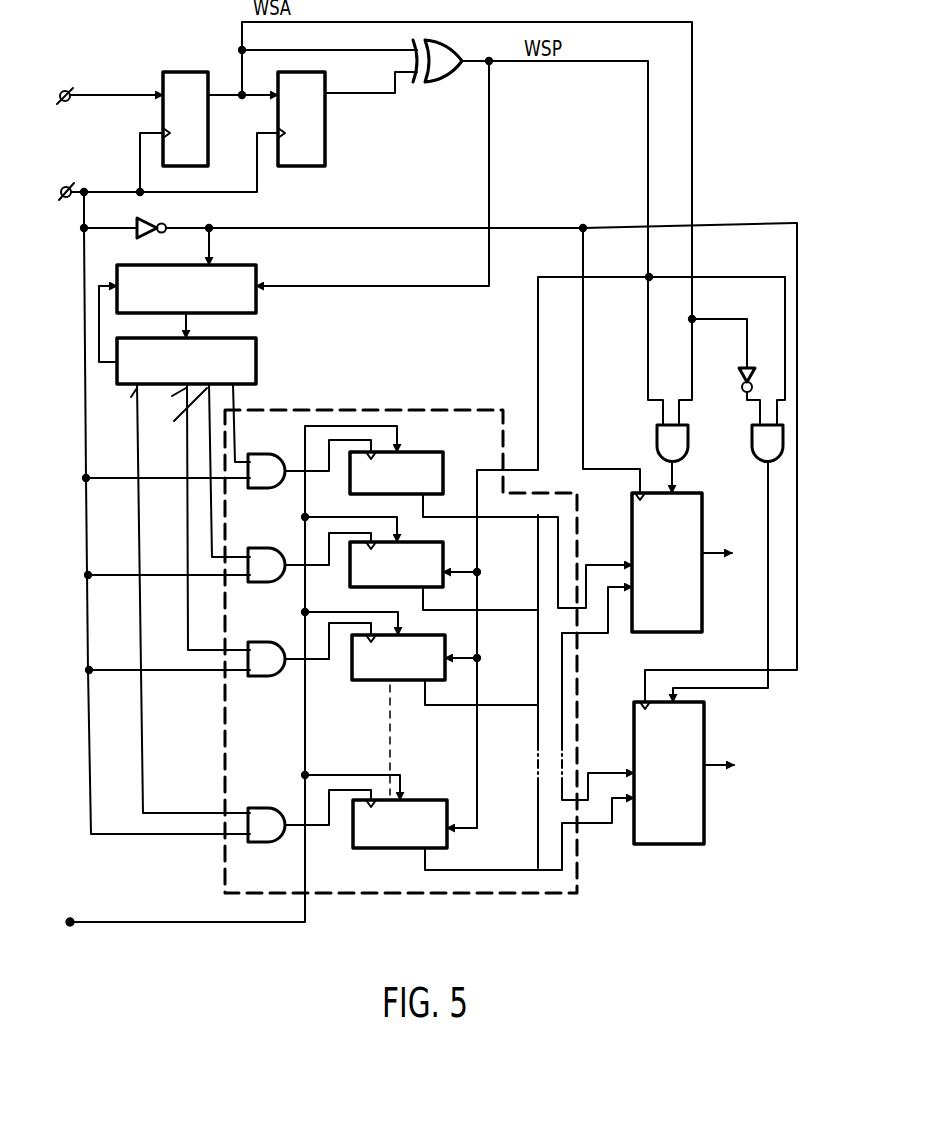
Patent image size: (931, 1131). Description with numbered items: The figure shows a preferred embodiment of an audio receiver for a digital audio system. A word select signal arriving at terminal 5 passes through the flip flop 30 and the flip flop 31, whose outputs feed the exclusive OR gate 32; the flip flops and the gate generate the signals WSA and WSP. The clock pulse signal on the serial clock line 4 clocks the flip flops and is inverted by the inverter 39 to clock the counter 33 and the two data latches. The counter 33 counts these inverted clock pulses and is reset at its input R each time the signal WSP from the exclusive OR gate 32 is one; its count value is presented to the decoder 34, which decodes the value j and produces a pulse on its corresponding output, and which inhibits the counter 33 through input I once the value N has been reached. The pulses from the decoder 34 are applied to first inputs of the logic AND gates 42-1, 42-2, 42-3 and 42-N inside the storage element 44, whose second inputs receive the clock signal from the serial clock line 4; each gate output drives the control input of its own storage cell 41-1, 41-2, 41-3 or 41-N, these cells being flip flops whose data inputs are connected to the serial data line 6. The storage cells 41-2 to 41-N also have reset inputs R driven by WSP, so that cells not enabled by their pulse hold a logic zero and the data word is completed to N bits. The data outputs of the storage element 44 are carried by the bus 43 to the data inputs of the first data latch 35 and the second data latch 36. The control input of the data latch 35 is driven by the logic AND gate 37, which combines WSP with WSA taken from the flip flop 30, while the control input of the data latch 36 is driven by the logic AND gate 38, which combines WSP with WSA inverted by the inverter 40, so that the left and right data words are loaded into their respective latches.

The serial clock line 4 is at (97, 191).
The word select input terminal 5 is at (105, 94).
The serial data line 6 is at (157, 919).
The flip flop 30 is at (185, 71).
The flip flop 31 is at (325, 141).
The exclusive OR gate 32 is at (444, 82).
The counter 33 is at (256, 302).
The decoder 34 is at (256, 364).
The first data latch 35 is at (702, 512).
The second data latch 36 is at (704, 732).
The logic AND gate 37 is at (690, 447).
The logic AND gate 38 is at (750, 449).
The inverter 39 is at (160, 222).
The inverter 40 is at (757, 374).
The storage cell 41-1 is at (443, 458).
The storage cell 41-2 is at (443, 546).
The storage cell 41-3 is at (445, 640).
The storage cell 41-N is at (415, 795).
The logic AND gate 42-1 is at (265, 489).
The logic AND gate 42-2 is at (265, 583).
The logic AND gate 42-3 is at (265, 677).
The logic AND gate 42-N is at (265, 843).
The bus 43 is at (565, 700).
The storage element 44 is at (443, 407).